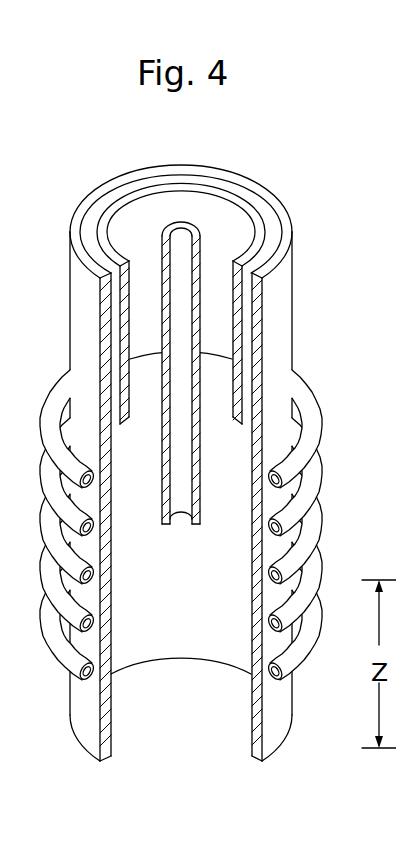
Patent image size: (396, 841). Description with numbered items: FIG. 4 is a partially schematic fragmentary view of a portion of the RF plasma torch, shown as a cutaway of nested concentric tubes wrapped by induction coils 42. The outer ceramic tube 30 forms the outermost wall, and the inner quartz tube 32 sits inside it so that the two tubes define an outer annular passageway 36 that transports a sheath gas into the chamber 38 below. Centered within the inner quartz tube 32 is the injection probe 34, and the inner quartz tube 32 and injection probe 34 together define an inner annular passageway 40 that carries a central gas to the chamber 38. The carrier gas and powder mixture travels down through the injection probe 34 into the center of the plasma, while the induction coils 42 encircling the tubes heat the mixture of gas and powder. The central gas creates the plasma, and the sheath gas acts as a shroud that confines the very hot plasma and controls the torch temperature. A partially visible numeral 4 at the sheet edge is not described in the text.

The outer ceramic tube 30 is at (292, 260).
The inner quartz tube 32 is at (253, 232).
The injection probe 34 is at (177, 227).
The outer annular passageway 36 is at (268, 227).
The chamber 38 is at (182, 712).
The inner annular passageway 40 is at (128, 222).
The induction coils 42 is at (48, 643).
The partial reference numeral at sheet edge 4 is at (4, 254).